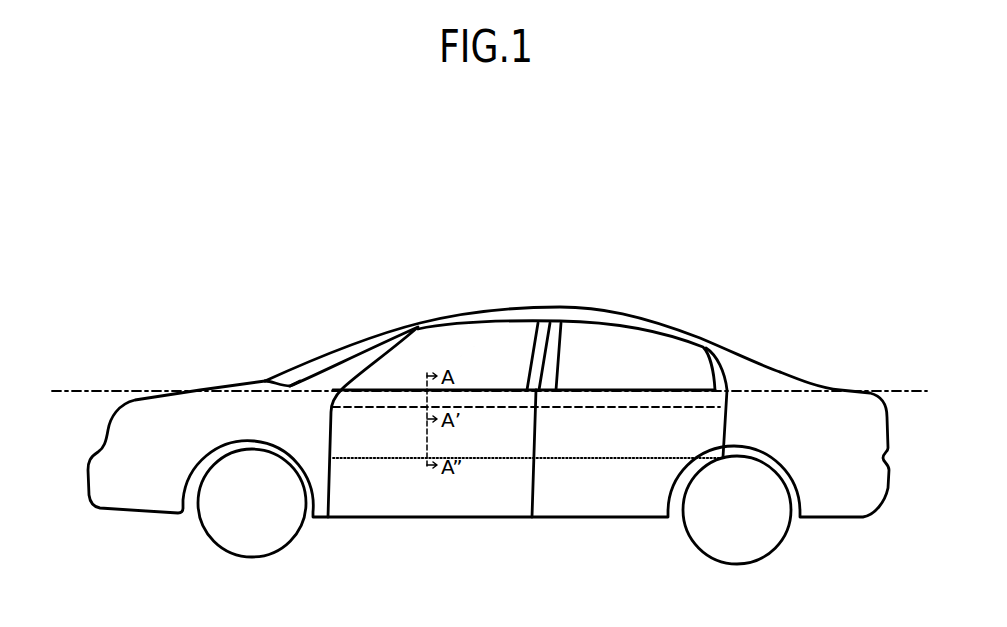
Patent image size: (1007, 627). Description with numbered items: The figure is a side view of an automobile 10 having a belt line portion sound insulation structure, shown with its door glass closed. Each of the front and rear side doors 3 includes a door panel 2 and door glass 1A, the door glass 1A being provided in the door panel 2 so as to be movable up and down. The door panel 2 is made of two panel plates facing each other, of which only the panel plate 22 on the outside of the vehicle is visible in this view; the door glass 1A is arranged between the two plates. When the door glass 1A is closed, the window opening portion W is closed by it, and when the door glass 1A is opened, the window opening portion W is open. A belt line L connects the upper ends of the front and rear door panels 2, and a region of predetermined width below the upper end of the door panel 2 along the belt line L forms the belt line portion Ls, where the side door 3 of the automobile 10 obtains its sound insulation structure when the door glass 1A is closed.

The automobile 10 is at (815, 262).
The door glass 1A is at (473, 347).
The door panel 2 is at (485, 485).
The panel plate 22 is at (393, 490).
The side door 3 is at (375, 379).
The window opening portion W is at (460, 357).
The belt line portion Ls is at (628, 400).
The belt line L is at (488, 392).